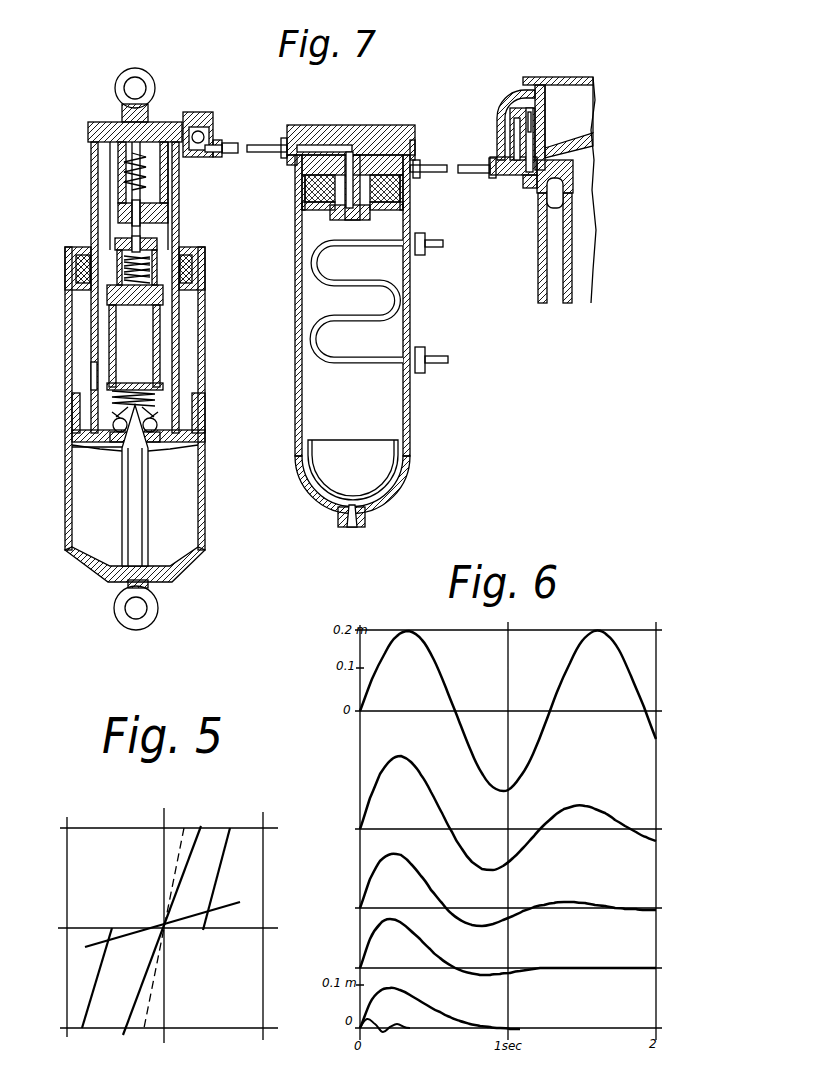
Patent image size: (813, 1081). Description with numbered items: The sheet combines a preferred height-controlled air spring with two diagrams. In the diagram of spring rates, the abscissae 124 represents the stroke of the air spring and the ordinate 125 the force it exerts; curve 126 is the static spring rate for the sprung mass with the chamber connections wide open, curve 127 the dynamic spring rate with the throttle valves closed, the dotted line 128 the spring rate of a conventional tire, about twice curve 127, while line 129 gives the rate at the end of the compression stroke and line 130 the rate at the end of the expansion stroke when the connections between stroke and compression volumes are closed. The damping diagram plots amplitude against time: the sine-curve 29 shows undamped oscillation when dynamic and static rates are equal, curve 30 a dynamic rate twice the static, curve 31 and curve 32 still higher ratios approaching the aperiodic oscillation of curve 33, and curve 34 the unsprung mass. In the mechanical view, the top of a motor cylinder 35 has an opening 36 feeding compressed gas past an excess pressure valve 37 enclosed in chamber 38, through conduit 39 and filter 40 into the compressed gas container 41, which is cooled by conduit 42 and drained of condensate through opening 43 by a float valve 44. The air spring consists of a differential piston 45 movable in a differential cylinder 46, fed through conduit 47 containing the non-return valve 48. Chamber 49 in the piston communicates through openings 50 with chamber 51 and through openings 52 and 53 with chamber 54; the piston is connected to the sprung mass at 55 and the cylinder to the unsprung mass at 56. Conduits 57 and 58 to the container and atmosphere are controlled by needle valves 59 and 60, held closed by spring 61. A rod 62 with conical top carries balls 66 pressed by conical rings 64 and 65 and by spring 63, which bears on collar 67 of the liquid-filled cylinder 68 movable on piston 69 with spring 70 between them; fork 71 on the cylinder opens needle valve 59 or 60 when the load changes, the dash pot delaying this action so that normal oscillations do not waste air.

In FIG. 6, the sine-curve 29 is at (441, 671).
In FIG. 6, the curve 30 is at (430, 792).
In FIG. 6, the curve 31 is at (424, 879).
In FIG. 6, the curve 32 is at (428, 946).
In FIG. 6, the curve 33 is at (425, 1005).
In FIG. 6, the curve 34 is at (382, 1033).
In FIG. 7, the cylinder 35 is at (598, 137).
In FIG. 7, the opening 36 is at (575, 172).
In FIG. 7, the excess pressure valve 37 is at (536, 143).
In FIG. 7, the chamber 38 is at (526, 140).
In FIG. 7, the conduit 39 is at (421, 160).
In FIG. 7, the filter 40 is at (401, 188).
In FIG. 7, the compressed gas container 41 is at (410, 278).
In FIG. 7, the conduit 42 is at (436, 363).
In FIG. 7, the opening 43 is at (353, 528).
In FIG. 7, the float valve 44 is at (390, 493).
In FIG. 7, the differential piston 45 is at (200, 412).
In FIG. 7, the differential cylinder 46 is at (205, 488).
In FIG. 7, the conduit 47 is at (266, 140).
In FIG. 7, the non-return valve 48 is at (207, 118).
In FIG. 7, the chamber 49 is at (165, 345).
In FIG. 7, the openings 50 is at (91, 364).
In FIG. 7, the chamber 51 is at (84, 328).
In FIG. 7, the openings 52 is at (187, 437).
In FIG. 7, the openings 53 is at (168, 448).
In FIG. 7, the chamber 54 is at (173, 521).
In FIG. 7, the connection 55 is at (152, 76).
In FIG. 7, the connection 56 is at (159, 608).
In FIG. 7, the conduit 57 is at (160, 178).
In FIG. 7, the conduit 58 is at (95, 124).
In FIG. 7, the needle valve 59 is at (150, 205).
In FIG. 7, the needle valve 60 is at (141, 147).
In FIG. 7, the spring 61 is at (124, 165).
In FIG. 7, the rod 62 is at (122, 507).
In FIG. 7, the spring 63 is at (152, 394).
In FIG. 7, the conical ring 64 is at (113, 422).
In FIG. 7, the conical ring 65 is at (88, 447).
In FIG. 7, the balls 66 is at (112, 430).
In FIG. 7, the collar 67 is at (162, 317).
In FIG. 7, the cylinder 68 is at (158, 243).
In FIG. 7, the piston 69 is at (118, 256).
In FIG. 7, the spring 70 is at (105, 292).
In FIG. 7, the fork 71 is at (110, 188).
In FIG. 5, the abscissae 124 is at (268, 930).
In FIG. 5, the ordinate 125 is at (164, 814).
In FIG. 5, the curve 126 is at (237, 907).
In FIG. 5, the curve 127 is at (198, 838).
In FIG. 5, the dotted line 128 is at (187, 828).
In FIG. 5, the line 129 is at (228, 857).
In FIG. 5, the line 130 is at (87, 987).